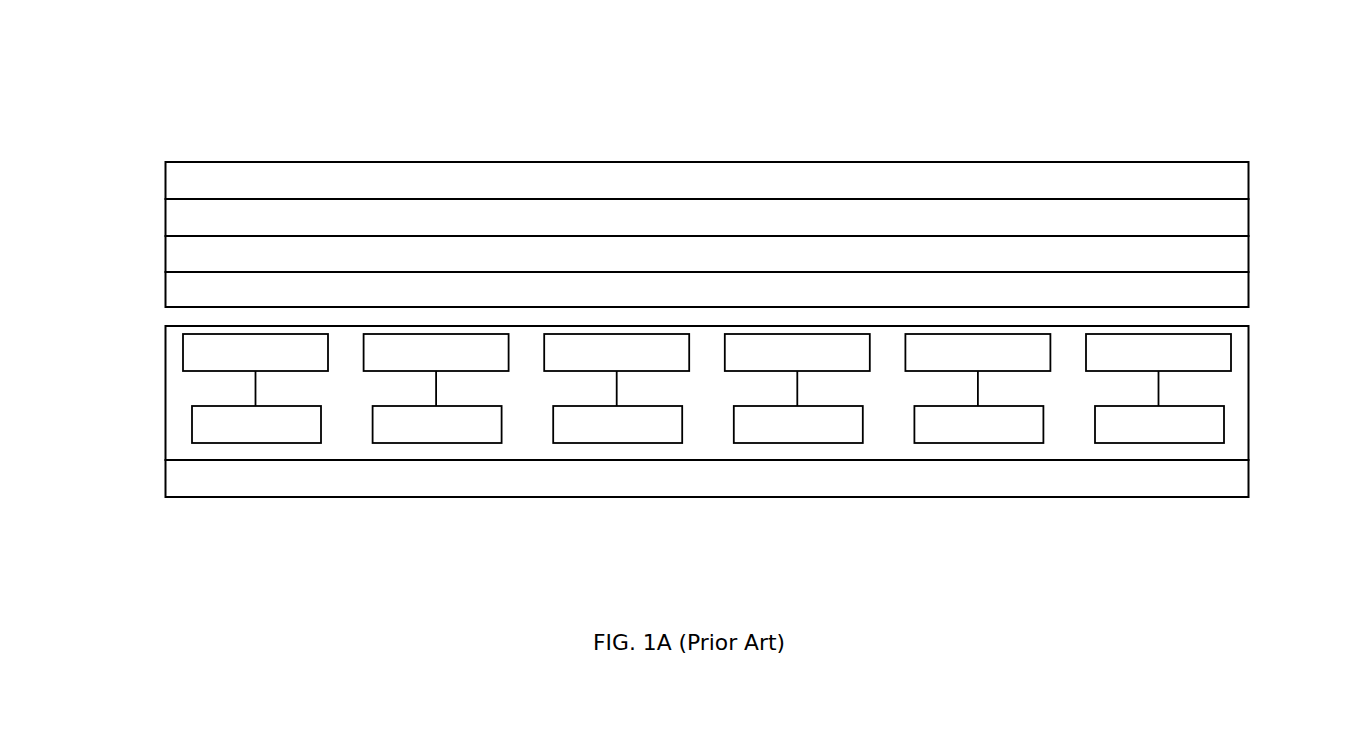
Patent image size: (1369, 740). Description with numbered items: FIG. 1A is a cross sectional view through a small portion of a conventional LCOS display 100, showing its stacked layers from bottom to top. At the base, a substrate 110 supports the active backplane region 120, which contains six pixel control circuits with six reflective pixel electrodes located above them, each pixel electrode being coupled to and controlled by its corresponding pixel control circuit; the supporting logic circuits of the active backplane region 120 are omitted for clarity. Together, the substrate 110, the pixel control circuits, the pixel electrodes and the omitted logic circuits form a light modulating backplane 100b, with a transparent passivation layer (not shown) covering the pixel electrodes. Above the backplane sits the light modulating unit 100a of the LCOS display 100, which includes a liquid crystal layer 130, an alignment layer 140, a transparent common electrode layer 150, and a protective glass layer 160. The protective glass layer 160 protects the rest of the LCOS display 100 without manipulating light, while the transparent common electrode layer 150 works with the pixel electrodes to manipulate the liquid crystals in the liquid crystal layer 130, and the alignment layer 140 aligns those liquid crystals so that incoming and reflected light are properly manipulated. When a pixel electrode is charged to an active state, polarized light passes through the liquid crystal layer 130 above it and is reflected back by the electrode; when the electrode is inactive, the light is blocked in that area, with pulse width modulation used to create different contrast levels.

The LCOS display 100 is at (779, 91).
The light modulating unit 100a is at (704, 229).
The light modulating backplane 100b is at (696, 411).
The substrate 110 is at (1248, 480).
The active backplane region 120 is at (1248, 380).
The liquid crystal layer 130 is at (1248, 288).
The alignment layer 140 is at (1248, 253).
The transparent common electrode layer 150 is at (1248, 217).
The protective glass layer 160 is at (1248, 181).